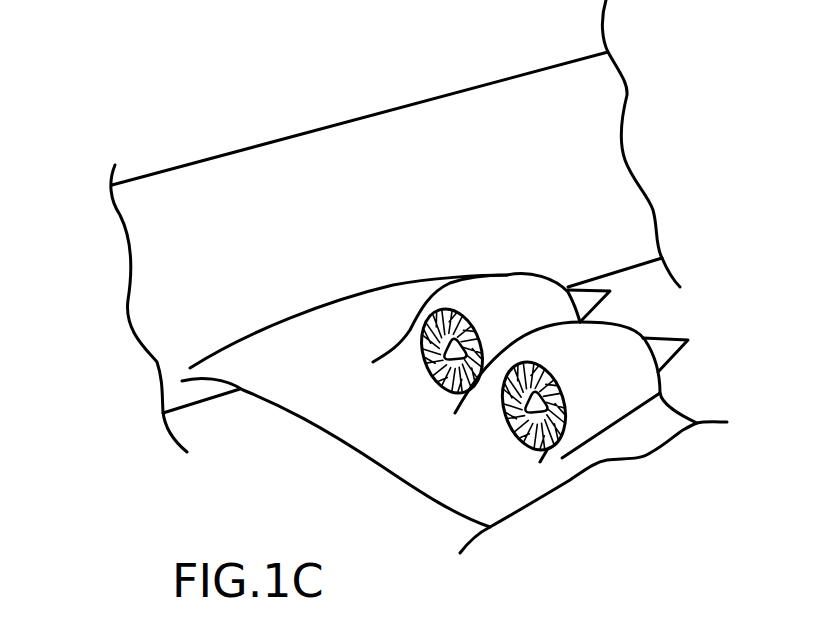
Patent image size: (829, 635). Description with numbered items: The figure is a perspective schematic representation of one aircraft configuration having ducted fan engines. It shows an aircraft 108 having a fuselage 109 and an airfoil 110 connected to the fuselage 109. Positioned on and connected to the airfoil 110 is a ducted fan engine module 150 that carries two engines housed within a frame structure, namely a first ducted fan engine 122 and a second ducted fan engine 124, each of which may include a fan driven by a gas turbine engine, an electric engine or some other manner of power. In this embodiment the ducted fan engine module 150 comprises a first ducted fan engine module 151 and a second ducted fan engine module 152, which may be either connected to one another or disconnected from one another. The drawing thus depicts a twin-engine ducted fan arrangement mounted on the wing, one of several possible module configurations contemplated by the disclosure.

The aircraft 108 is at (138, 148).
The fuselage 109 is at (515, 113).
The airfoil 110 is at (658, 425).
The first ducted fan engine 122 is at (425, 365).
The second ducted fan engine 124 is at (520, 423).
The ducted fan engine module 150 is at (620, 342).
The first ducted fan engine module 151 is at (642, 400).
The second ducted fan engine module 152 is at (502, 282).